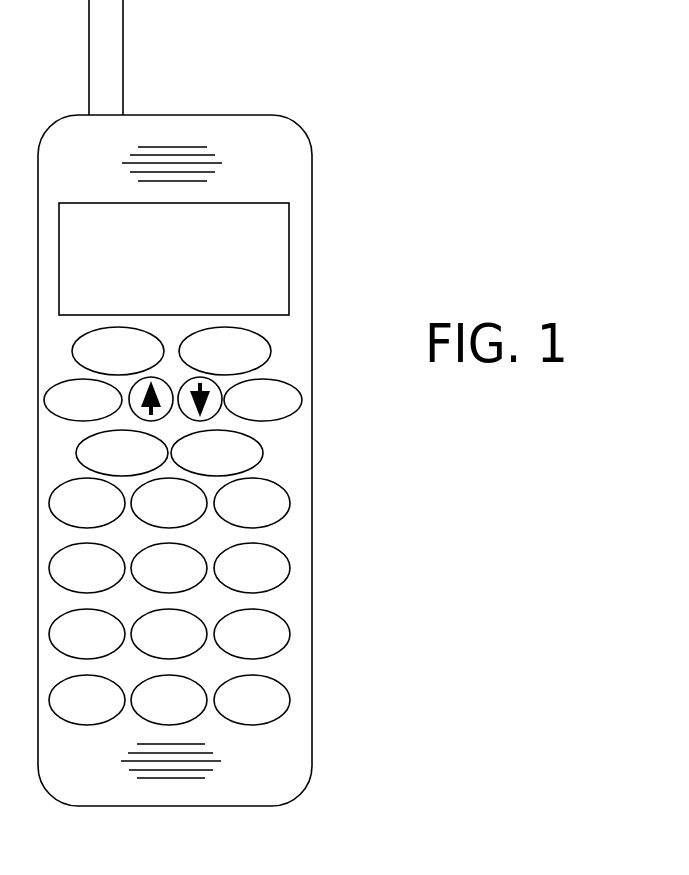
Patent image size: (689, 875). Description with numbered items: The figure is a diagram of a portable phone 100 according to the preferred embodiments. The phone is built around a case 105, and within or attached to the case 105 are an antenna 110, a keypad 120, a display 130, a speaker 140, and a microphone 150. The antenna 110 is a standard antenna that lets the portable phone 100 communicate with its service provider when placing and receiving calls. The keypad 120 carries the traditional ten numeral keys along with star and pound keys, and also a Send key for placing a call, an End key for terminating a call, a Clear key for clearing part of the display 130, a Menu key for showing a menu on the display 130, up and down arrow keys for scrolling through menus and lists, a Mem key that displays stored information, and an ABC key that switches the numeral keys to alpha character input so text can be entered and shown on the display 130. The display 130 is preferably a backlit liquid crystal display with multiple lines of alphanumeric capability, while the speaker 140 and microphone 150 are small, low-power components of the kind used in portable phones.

The portable phone 100 is at (558, 99).
The case 105 is at (312, 322).
The antenna 110 is at (124, 80).
The keypad 120 is at (320, 332).
The display 130 is at (289, 240).
The speaker 140 is at (222, 156).
The microphone 150 is at (218, 770).